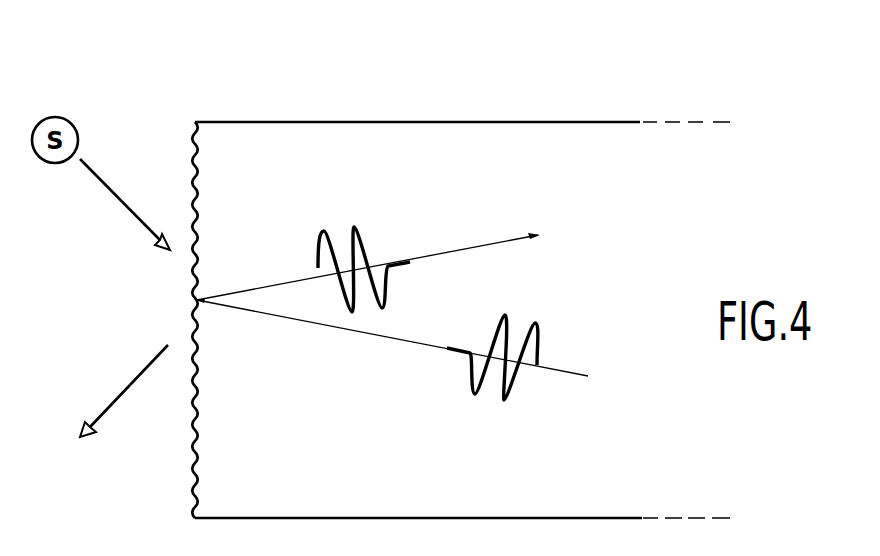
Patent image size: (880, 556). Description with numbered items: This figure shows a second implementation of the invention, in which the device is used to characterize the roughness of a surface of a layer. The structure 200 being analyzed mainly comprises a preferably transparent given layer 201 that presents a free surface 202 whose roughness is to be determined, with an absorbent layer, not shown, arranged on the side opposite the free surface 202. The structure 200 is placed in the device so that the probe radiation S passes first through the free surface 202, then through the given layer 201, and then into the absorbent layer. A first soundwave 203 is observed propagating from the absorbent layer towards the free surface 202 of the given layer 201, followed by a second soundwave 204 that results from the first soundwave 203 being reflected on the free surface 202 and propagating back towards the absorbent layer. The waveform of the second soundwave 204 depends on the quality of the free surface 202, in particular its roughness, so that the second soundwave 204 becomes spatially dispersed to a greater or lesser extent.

The structure 200 is at (390, 112).
The given layer 201 is at (542, 150).
The free surface 202 is at (193, 158).
The first soundwave 203 is at (518, 383).
The second soundwave 204 is at (367, 238).